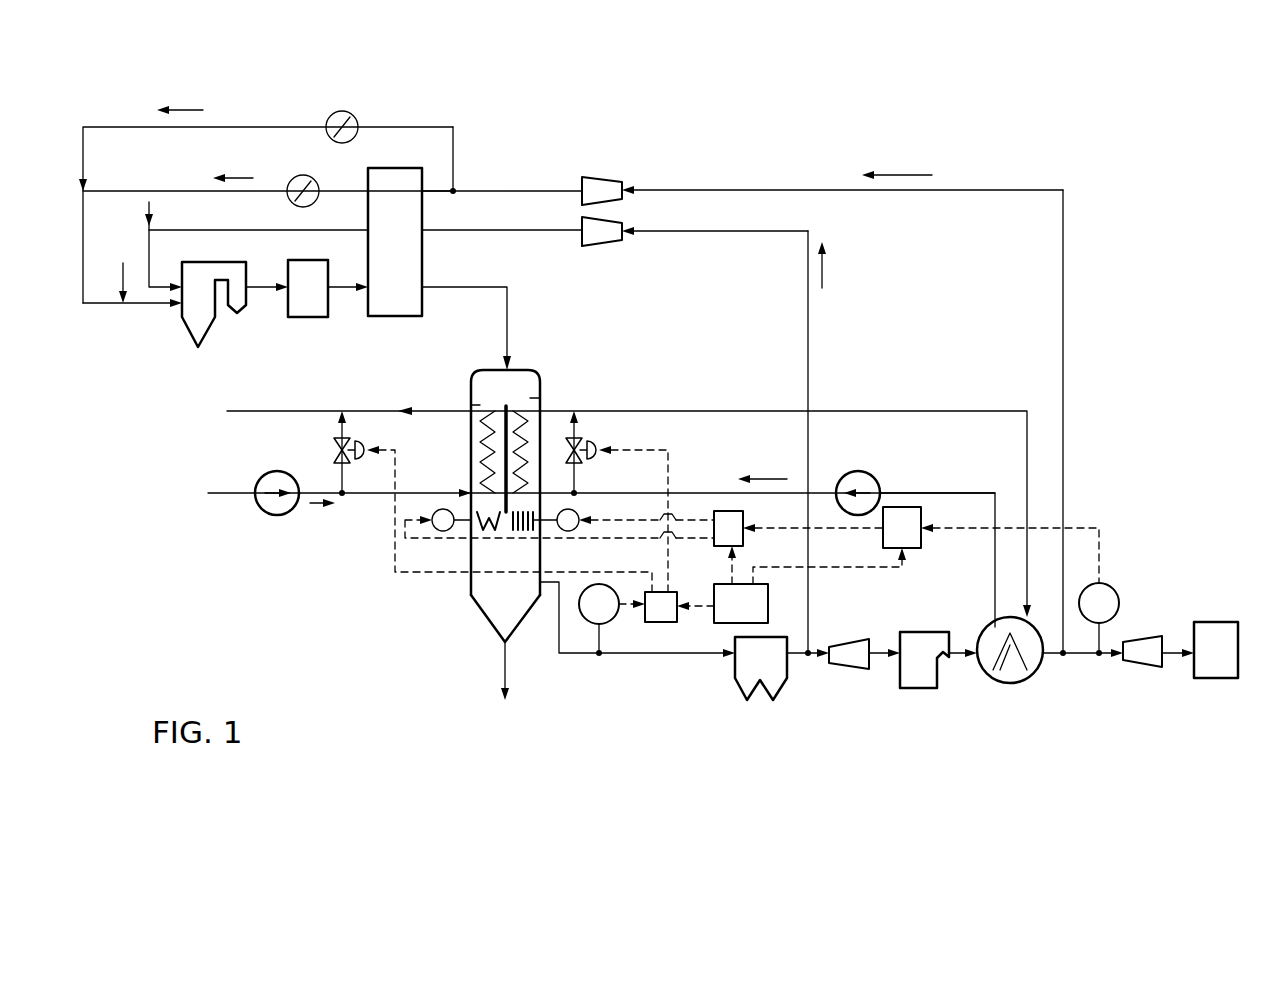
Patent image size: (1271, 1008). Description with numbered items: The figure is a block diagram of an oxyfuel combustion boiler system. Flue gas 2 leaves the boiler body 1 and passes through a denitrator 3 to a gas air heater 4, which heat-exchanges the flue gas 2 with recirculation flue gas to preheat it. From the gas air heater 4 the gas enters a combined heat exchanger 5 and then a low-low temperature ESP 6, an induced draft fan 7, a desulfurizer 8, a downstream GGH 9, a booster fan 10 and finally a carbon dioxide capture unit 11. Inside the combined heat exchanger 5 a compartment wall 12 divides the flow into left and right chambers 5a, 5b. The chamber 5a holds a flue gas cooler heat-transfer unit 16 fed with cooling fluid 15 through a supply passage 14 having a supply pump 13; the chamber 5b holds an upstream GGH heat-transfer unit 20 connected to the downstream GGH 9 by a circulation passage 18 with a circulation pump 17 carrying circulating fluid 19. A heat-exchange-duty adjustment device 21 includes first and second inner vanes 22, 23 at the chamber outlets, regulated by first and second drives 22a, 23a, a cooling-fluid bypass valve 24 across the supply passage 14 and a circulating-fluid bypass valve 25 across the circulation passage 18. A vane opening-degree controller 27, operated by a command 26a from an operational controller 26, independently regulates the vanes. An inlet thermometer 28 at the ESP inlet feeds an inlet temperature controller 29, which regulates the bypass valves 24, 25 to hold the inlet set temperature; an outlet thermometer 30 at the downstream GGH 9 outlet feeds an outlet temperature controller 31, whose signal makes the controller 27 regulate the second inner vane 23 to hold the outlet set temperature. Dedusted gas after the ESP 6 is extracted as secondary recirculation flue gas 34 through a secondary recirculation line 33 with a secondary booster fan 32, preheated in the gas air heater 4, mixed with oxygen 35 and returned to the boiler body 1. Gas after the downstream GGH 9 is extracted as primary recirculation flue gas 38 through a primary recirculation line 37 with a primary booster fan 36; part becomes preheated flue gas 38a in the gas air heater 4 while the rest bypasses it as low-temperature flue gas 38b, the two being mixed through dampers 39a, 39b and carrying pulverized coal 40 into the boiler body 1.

The boiler body 1 is at (185, 333).
The flue gas 2 is at (262, 285).
The denitrator 3 is at (305, 318).
The gas air heater 4 is at (399, 253).
The combined heat exchanger 5 is at (536, 360).
The chamber 5a is at (480, 405).
The chamber 5b is at (532, 398).
The low-low temperature ESP 6 is at (780, 693).
The induced draft fan 7 is at (850, 668).
The desulfurizer 8 is at (907, 680).
The downstream GGH 9 is at (1027, 680).
The booster fan 10 is at (1150, 636).
The carbon dioxide capture unit 11 is at (1212, 622).
The compartment wall 12 is at (500, 405).
The supply pump 13 is at (275, 514).
The supply passage 14 is at (222, 497).
The cooling fluid 15 is at (315, 507).
The flue gas cooler heat-transfer unit 16 is at (482, 463).
The circulation pump 17 is at (862, 470).
The circulation passage 18 is at (950, 490).
The circulating fluid 19 is at (770, 479).
The upstream GGH heat-transfer unit 20 is at (545, 440).
The heat-exchange-duty adjustment device 21 is at (692, 508).
The first inner vane 22 is at (487, 532).
The first drive 22a is at (440, 532).
The second inner vane 23 is at (517, 532).
The second drive 23a is at (575, 532).
The cooling-fluid bypass valve 24 is at (367, 445).
The circulating-fluid bypass valve 25 is at (600, 447).
The operational controller 26 is at (760, 604).
The command 26a is at (703, 605).
The vane opening-degree controller 27 is at (745, 522).
The inlet thermometer 28 is at (612, 620).
The inlet temperature controller 29 is at (672, 622).
The outlet thermometer 30 is at (1118, 585).
The outlet temperature controller 31 is at (917, 548).
The secondary booster fan 32 is at (607, 246).
The secondary recirculation line 33 is at (810, 318).
The secondary recirculation flue gas 34 is at (824, 272).
The oxygen 35 is at (147, 215).
The primary booster fan 36 is at (612, 177).
The primary recirculation line 37 is at (1040, 188).
The primary recirculation flue gas 38 is at (922, 175).
The preheated flue gas 38a is at (248, 176).
The low-temperature flue gas 38b is at (200, 108).
The damper 39a is at (300, 177).
The damper 39b is at (355, 117).
The pulverized coal 40 is at (120, 286).